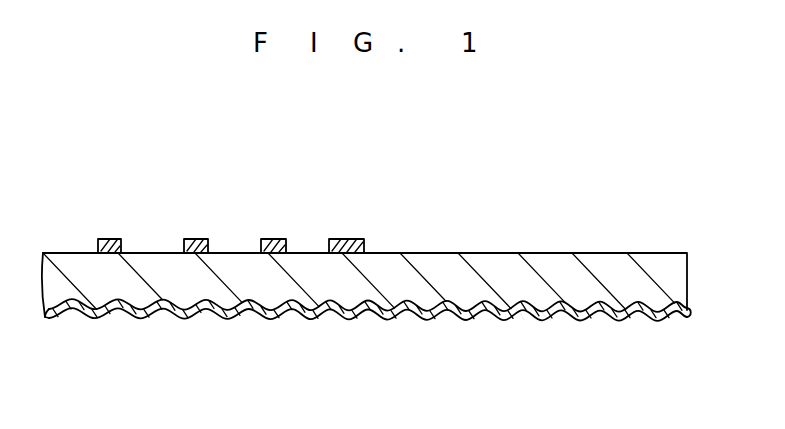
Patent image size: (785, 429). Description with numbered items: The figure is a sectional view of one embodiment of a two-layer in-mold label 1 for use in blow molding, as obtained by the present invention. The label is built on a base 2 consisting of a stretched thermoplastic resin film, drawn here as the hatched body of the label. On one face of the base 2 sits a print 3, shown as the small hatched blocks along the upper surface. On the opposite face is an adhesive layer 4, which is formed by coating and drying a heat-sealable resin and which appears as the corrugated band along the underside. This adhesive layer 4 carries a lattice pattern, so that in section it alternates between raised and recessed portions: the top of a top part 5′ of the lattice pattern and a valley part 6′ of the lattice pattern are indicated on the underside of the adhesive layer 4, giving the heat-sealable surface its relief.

The in-mold label 1 is at (413, 219).
The base 2 is at (678, 280).
The print 3 is at (267, 238).
The adhesive layer 4 is at (688, 322).
The valley part 6′ is at (525, 319).
The top of a top part 5′ is at (550, 320).